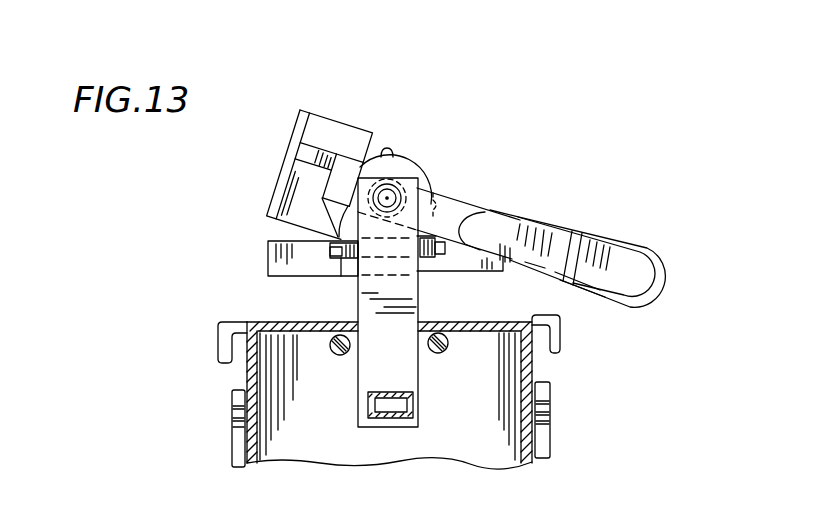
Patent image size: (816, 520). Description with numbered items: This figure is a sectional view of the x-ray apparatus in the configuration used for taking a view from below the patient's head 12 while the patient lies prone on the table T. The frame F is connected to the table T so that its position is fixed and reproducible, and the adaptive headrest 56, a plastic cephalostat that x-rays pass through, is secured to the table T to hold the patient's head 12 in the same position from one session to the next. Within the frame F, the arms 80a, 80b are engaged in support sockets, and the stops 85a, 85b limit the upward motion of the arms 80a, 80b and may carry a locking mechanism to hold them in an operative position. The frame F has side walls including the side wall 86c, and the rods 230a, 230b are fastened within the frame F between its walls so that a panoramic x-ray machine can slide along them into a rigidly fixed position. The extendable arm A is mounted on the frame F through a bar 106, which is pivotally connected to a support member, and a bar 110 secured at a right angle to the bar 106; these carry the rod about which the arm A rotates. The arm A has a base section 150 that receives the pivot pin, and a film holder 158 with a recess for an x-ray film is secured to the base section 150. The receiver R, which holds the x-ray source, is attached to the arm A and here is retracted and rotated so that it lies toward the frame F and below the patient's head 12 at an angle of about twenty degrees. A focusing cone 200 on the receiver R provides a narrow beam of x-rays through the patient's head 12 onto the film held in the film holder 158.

The patient's head 12 is at (412, 157).
The adaptive headrest 56 is at (340, 262).
The arm 80a is at (232, 443).
The arm 80b is at (552, 432).
The stop 85a is at (218, 343).
The stop 85b is at (560, 340).
The side wall 86c is at (510, 452).
The bar 106 is at (372, 420).
The bar 110 is at (420, 300).
The base section 150 is at (442, 188).
The film holder 158 is at (340, 120).
The focusing cone 200 is at (562, 212).
The rod 230a is at (340, 357).
The rod 230b is at (446, 355).
The extendable arm A is at (462, 192).
The frame F is at (532, 368).
The receiver R is at (640, 248).
The table T is at (268, 259).